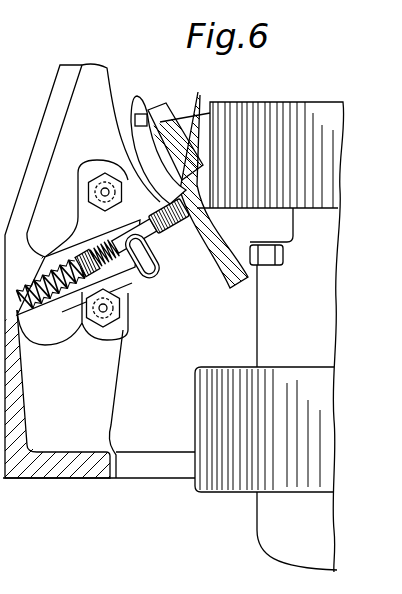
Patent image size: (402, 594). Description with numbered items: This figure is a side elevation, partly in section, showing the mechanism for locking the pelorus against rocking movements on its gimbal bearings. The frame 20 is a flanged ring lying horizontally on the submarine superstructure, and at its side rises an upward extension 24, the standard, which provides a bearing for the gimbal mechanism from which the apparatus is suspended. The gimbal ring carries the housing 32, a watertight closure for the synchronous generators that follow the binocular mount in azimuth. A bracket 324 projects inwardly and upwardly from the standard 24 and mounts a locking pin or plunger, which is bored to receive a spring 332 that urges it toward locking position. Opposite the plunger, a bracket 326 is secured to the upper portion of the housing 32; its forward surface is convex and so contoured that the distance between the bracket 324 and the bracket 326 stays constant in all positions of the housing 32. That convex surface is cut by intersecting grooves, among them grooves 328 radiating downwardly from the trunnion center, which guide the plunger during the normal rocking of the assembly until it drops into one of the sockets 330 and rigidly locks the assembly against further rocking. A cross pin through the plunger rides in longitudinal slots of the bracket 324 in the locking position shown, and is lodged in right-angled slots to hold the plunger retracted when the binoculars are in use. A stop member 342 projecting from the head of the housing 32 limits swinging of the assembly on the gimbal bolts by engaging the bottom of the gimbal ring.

The frame 20 is at (173, 318).
The upward extension 24 is at (50, 118).
The housing 32 is at (297, 417).
The bracket 324 is at (92, 176).
The bracket 326 is at (230, 290).
The grooves 328 is at (140, 116).
The sockets 330 is at (199, 122).
The spring 332 is at (55, 322).
The stop member 342 is at (180, 127).